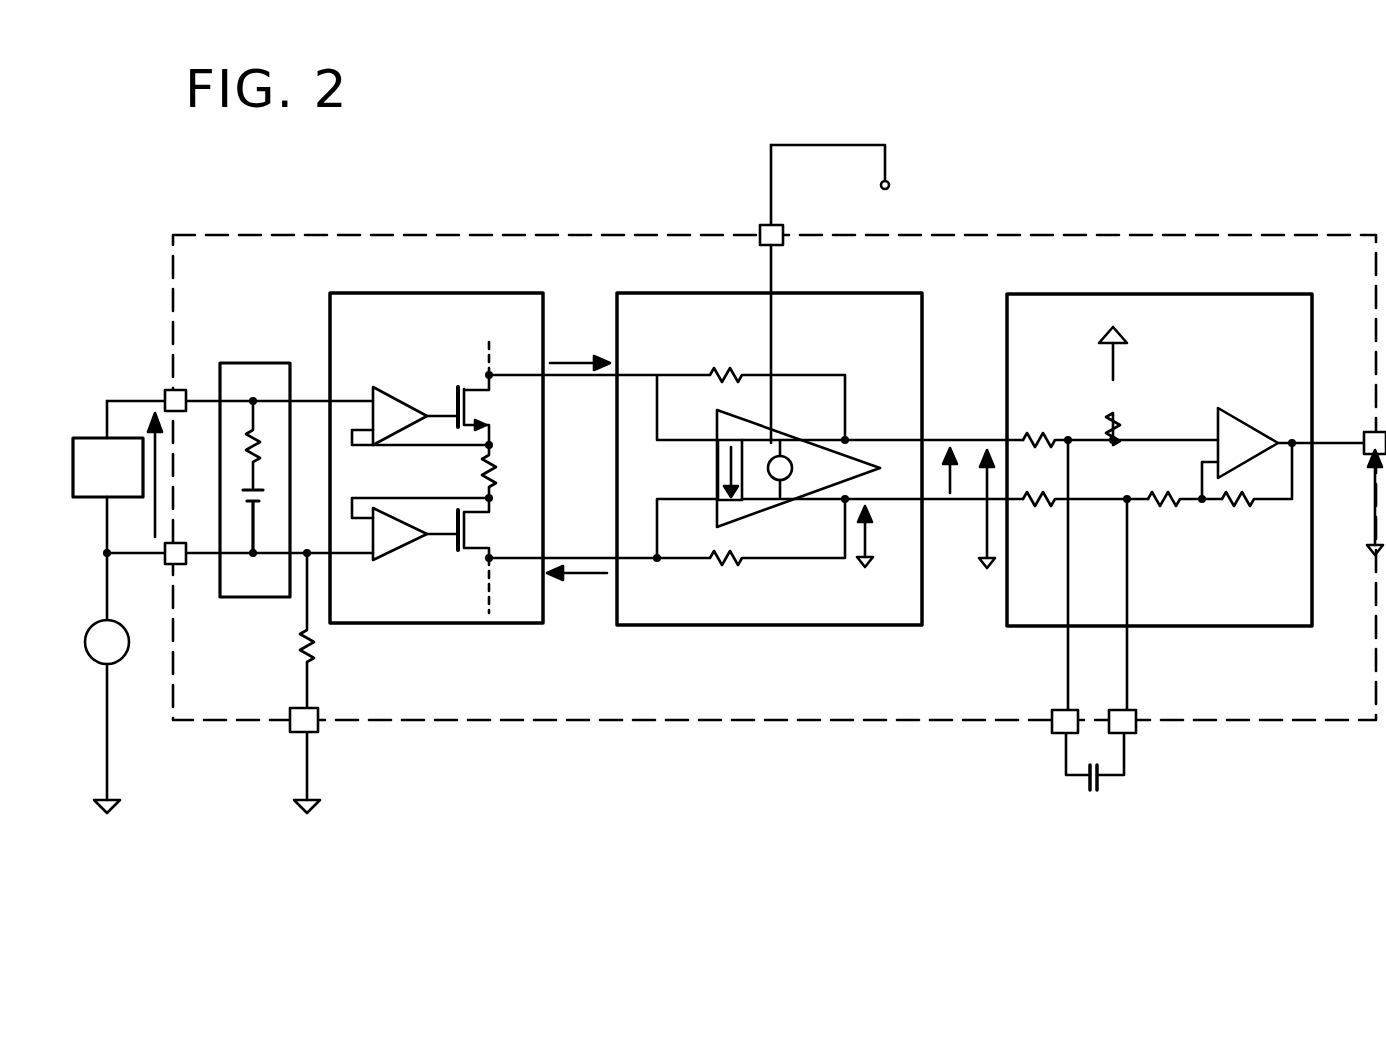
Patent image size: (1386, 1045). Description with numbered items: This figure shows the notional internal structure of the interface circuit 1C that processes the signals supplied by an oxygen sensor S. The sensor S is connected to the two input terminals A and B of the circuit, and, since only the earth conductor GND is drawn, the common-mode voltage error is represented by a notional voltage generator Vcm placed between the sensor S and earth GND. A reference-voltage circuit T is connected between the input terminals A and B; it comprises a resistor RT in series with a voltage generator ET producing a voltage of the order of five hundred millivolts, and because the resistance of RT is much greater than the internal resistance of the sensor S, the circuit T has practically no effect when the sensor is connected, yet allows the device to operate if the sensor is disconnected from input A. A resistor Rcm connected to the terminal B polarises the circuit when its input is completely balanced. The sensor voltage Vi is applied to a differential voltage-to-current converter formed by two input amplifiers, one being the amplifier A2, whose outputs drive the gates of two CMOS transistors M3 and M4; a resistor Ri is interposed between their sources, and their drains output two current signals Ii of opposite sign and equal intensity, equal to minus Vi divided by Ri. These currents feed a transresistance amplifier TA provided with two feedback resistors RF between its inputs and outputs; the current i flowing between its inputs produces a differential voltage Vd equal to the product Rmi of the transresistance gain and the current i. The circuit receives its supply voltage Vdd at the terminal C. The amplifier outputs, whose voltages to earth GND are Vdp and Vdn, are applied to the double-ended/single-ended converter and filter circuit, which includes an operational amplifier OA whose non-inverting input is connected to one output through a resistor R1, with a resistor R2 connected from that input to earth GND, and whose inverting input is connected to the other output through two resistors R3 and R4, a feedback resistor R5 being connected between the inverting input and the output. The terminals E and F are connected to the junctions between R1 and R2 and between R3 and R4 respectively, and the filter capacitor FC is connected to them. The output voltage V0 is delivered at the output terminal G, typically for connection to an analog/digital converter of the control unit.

The interface circuit 1C is at (570, 270).
The transresistance amplifier TA is at (768, 445).
The sensor S is at (92, 438).
The common-mode voltage generator Vcm is at (122, 652).
The input terminal A is at (165, 393).
The input terminal B is at (170, 565).
The sensor voltage Vi is at (158, 470).
The reference voltage generating circuit T is at (240, 363).
The resistor RT is at (245, 440).
The voltage generator ET is at (265, 498).
The polarising resistor Rcm is at (320, 725).
The earth conductor GND is at (290, 808).
The transistor M3 is at (492, 392).
The resistor Ri is at (500, 485).
The transistor M4 is at (485, 548).
The input amplifier A2 is at (405, 545).
The current signal Ii is at (585, 610).
The supply terminal C is at (765, 228).
The voltage supply Vdd is at (889, 187).
The feedback resistor RF is at (715, 385).
The amplifier input current i is at (718, 467).
The transresistance output voltage Rmi is at (795, 471).
The negative output voltage Vdn is at (868, 540).
The differential voltage signal Vd is at (955, 470).
The positive output voltage Vdp is at (983, 530).
The resistor R1 is at (1040, 435).
The resistor R2 is at (1118, 395).
The resistor R3 is at (1040, 512).
The resistor R4 is at (1160, 512).
The feedback resistor R5 is at (1235, 512).
The operational amplifier OA is at (1252, 432).
The output terminal G is at (1366, 432).
The output voltage V0 is at (1372, 510).
The filter terminal E is at (1055, 732).
The filter terminal F is at (1135, 732).
The filter capacitor FC is at (1100, 778).